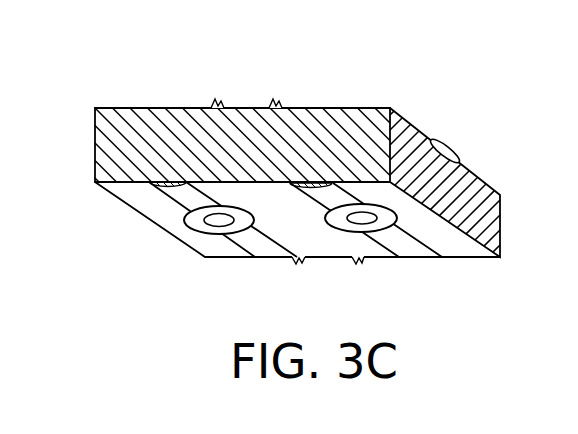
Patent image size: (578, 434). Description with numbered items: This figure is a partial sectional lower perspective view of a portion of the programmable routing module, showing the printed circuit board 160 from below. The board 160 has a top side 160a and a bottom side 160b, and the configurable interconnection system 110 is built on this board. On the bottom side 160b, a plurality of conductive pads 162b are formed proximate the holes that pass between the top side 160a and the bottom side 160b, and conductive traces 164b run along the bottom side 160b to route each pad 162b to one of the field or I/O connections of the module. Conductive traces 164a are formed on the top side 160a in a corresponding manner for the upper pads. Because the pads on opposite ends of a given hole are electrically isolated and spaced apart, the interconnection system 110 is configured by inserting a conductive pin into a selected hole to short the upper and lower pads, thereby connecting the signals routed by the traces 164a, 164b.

The interconnection system 110 is at (140, 302).
The printed circuit board 160 is at (94, 142).
The top side 160a is at (142, 73).
The bottom side 160b is at (450, 252).
The conductive traces 164a is at (455, 157).
The conductive traces 164b is at (183, 192).
The conductive pads 162b is at (200, 231).